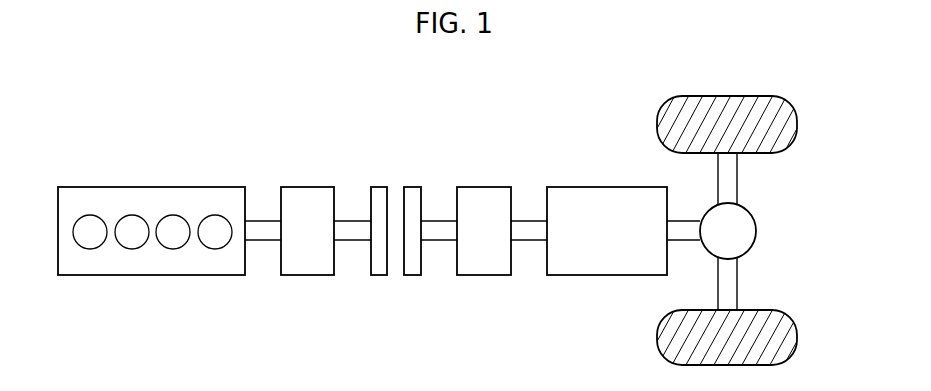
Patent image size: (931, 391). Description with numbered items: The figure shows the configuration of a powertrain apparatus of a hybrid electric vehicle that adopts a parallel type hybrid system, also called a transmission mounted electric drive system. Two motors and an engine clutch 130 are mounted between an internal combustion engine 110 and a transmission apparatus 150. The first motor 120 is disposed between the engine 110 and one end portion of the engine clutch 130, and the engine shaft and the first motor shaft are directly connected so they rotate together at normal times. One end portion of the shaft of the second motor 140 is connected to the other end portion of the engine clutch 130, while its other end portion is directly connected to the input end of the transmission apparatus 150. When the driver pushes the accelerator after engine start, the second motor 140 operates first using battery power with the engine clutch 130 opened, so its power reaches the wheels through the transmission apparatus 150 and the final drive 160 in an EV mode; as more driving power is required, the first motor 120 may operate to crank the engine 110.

The internal combustion engine 110 is at (153, 187).
The first motor 120 is at (307, 187).
The engine clutch 130 is at (412, 187).
The second motor 140 is at (483, 187).
The transmission apparatus 150 is at (588, 187).
The final drive 160 is at (756, 230).